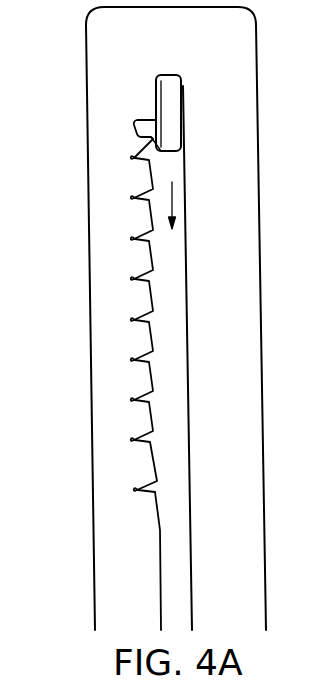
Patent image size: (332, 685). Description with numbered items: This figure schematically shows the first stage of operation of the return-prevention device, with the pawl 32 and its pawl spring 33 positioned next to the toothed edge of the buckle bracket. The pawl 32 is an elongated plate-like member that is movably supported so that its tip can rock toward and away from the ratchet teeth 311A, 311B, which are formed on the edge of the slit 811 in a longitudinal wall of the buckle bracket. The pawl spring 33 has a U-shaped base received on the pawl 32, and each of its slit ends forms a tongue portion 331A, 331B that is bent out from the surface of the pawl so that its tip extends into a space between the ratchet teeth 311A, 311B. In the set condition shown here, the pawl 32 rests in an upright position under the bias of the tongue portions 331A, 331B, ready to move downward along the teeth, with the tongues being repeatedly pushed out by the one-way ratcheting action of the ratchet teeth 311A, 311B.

The pawl 32 is at (171, 91).
The pawl spring 33 is at (187, 171).
The tongue portion 331A is at (135, 137).
The tongue portion 331B is at (91, 143).
The ratchet teeth 311A is at (148, 297).
The ratchet teeth 311B is at (188, 324).
The slit 811 is at (190, 421).